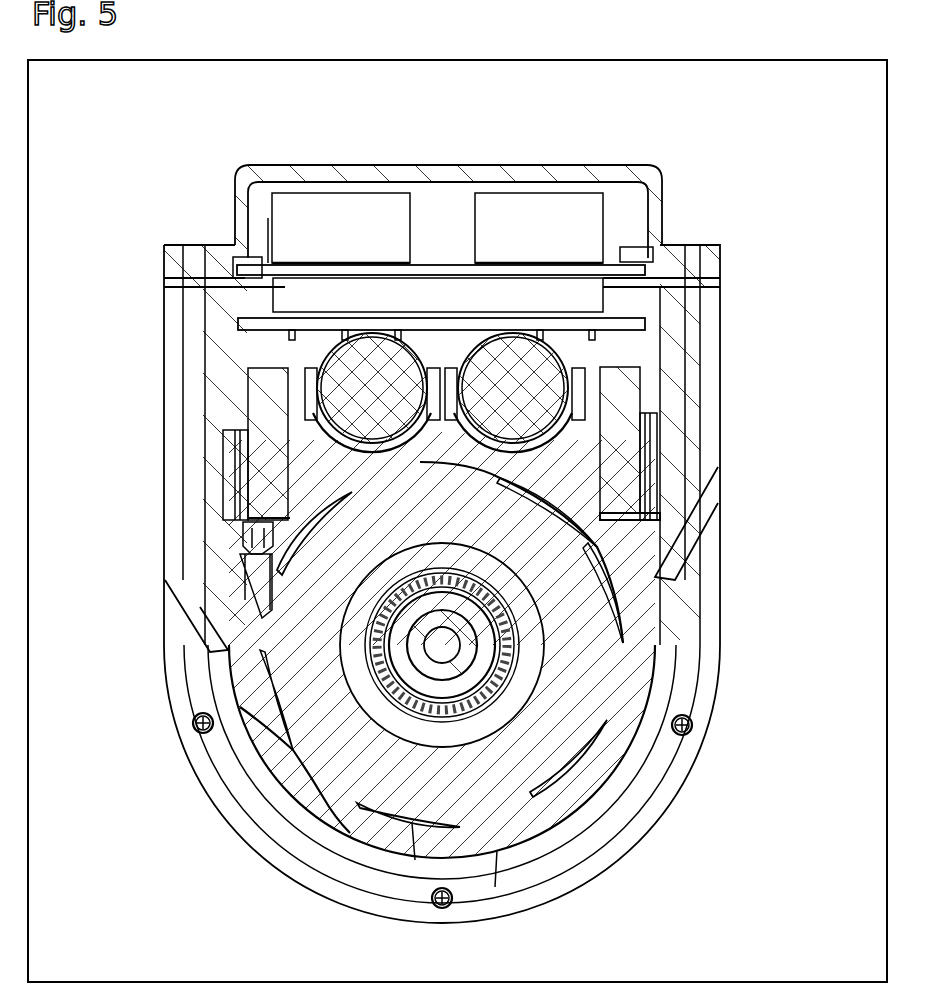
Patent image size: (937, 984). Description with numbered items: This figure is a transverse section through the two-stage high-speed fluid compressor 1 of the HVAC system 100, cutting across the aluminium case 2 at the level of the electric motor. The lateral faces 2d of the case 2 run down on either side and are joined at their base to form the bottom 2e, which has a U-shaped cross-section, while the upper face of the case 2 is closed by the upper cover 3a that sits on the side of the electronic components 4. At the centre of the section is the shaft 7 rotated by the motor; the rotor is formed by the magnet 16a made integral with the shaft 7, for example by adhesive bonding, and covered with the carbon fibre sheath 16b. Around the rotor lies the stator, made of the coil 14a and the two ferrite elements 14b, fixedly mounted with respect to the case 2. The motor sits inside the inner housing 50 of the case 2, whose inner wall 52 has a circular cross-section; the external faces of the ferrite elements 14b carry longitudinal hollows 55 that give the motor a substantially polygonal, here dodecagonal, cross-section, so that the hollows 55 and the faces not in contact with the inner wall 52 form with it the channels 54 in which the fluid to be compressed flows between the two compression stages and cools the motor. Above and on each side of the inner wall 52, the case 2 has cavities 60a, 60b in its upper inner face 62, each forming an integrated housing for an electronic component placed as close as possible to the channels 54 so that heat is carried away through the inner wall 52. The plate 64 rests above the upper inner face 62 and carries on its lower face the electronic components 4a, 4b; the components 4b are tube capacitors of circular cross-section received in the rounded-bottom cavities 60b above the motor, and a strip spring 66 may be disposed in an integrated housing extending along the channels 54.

The HVAC system 100 is at (715, 60).
The fluid compressor 1 is at (808, 178).
The case 2 is at (150, 336).
The lateral faces 2d is at (197, 473).
The bottom 2e is at (497, 853).
The upper cover 3a is at (440, 170).
The electronic components 4 is at (445, 247).
The electronic component 4a is at (262, 387).
The electronic component 4b is at (363, 350).
The shaft 7 is at (417, 648).
The coil 14a is at (525, 625).
The ferrite elements 14b is at (603, 700).
The magnet 16a is at (418, 688).
The carbon fibre sheath 16b is at (427, 712).
The inner housing 50 is at (565, 797).
The inner wall 52 is at (660, 757).
The channels 54 is at (260, 565).
The longitudinal hollows 55 is at (416, 830).
The cavity 60a is at (255, 567).
The cavity 60b is at (255, 515).
The upper inner face 62 is at (600, 350).
The plate 64 is at (573, 323).
The strip spring 66 is at (227, 438).